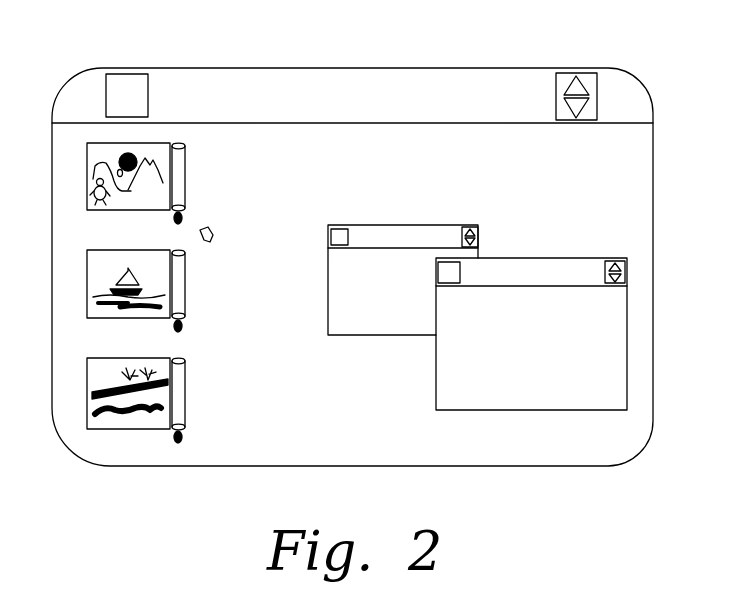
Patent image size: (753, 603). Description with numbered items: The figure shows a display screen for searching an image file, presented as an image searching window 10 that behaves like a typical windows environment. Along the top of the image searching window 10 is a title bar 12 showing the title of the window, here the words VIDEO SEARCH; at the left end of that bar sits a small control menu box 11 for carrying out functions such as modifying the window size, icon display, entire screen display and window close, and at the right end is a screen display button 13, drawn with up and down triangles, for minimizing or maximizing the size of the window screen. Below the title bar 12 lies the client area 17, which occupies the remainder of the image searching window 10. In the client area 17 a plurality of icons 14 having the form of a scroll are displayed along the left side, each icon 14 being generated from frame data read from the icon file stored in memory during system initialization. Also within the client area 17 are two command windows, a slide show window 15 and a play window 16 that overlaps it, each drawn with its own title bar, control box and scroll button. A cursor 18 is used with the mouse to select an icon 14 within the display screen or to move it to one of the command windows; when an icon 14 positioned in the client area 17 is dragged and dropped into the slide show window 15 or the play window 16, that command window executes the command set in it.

The image searching window 10 is at (391, 69).
The close box 11 is at (121, 74).
The title bar 12 is at (303, 83).
The screen display button 13 is at (582, 73).
The icons 14 is at (87, 176).
The slide show window 15 is at (466, 225).
The play window 16 is at (588, 258).
The client area 17 is at (620, 433).
The cursor 18 is at (213, 233).